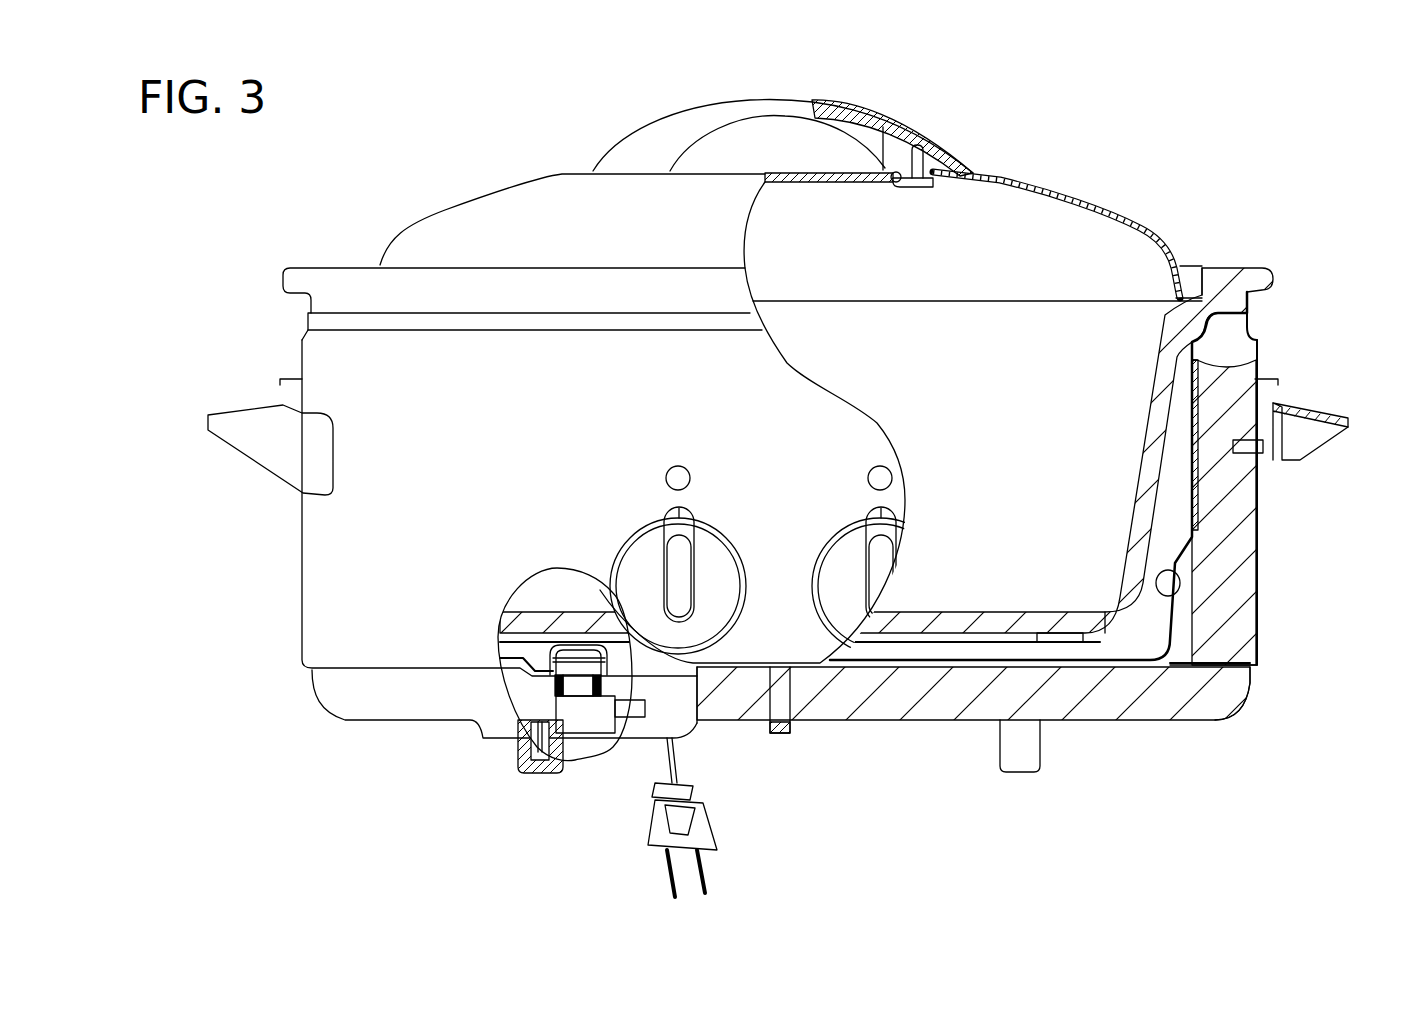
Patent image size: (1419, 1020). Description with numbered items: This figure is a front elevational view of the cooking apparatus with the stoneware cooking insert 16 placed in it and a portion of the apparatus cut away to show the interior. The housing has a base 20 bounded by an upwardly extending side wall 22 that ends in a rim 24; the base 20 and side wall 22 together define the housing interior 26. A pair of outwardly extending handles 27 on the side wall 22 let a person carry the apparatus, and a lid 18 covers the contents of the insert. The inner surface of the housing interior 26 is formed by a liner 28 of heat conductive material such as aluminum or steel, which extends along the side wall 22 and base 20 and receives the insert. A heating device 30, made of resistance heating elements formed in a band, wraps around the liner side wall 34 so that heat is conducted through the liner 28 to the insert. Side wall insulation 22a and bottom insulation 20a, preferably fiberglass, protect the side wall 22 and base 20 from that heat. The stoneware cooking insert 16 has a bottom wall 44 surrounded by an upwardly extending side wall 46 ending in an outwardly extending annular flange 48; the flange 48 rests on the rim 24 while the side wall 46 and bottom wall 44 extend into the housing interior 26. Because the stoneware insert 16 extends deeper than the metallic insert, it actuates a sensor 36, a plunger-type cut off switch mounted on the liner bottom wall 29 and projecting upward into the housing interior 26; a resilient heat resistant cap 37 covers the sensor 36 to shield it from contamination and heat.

The stoneware cooking insert 16 is at (348, 283).
The lid 18 is at (683, 117).
The base 20 is at (1070, 722).
The bottom insulation 20a is at (955, 700).
The side wall 22 is at (302, 592).
The side wall insulation 22a is at (1247, 515).
The rim 24 is at (1247, 313).
The housing interior 26 is at (1178, 675).
The handles 27 is at (208, 422).
The liner 28 is at (903, 667).
The liner bottom wall 29 is at (1147, 633).
The heating device 30 is at (1255, 358).
The liner side wall 34 is at (1178, 580).
The sensor 36 is at (588, 717).
The resilient heat resistant cap 37 is at (538, 662).
The bottom wall 44 is at (615, 752).
The side wall 46 is at (1143, 458).
The annular flange 48 is at (1235, 268).